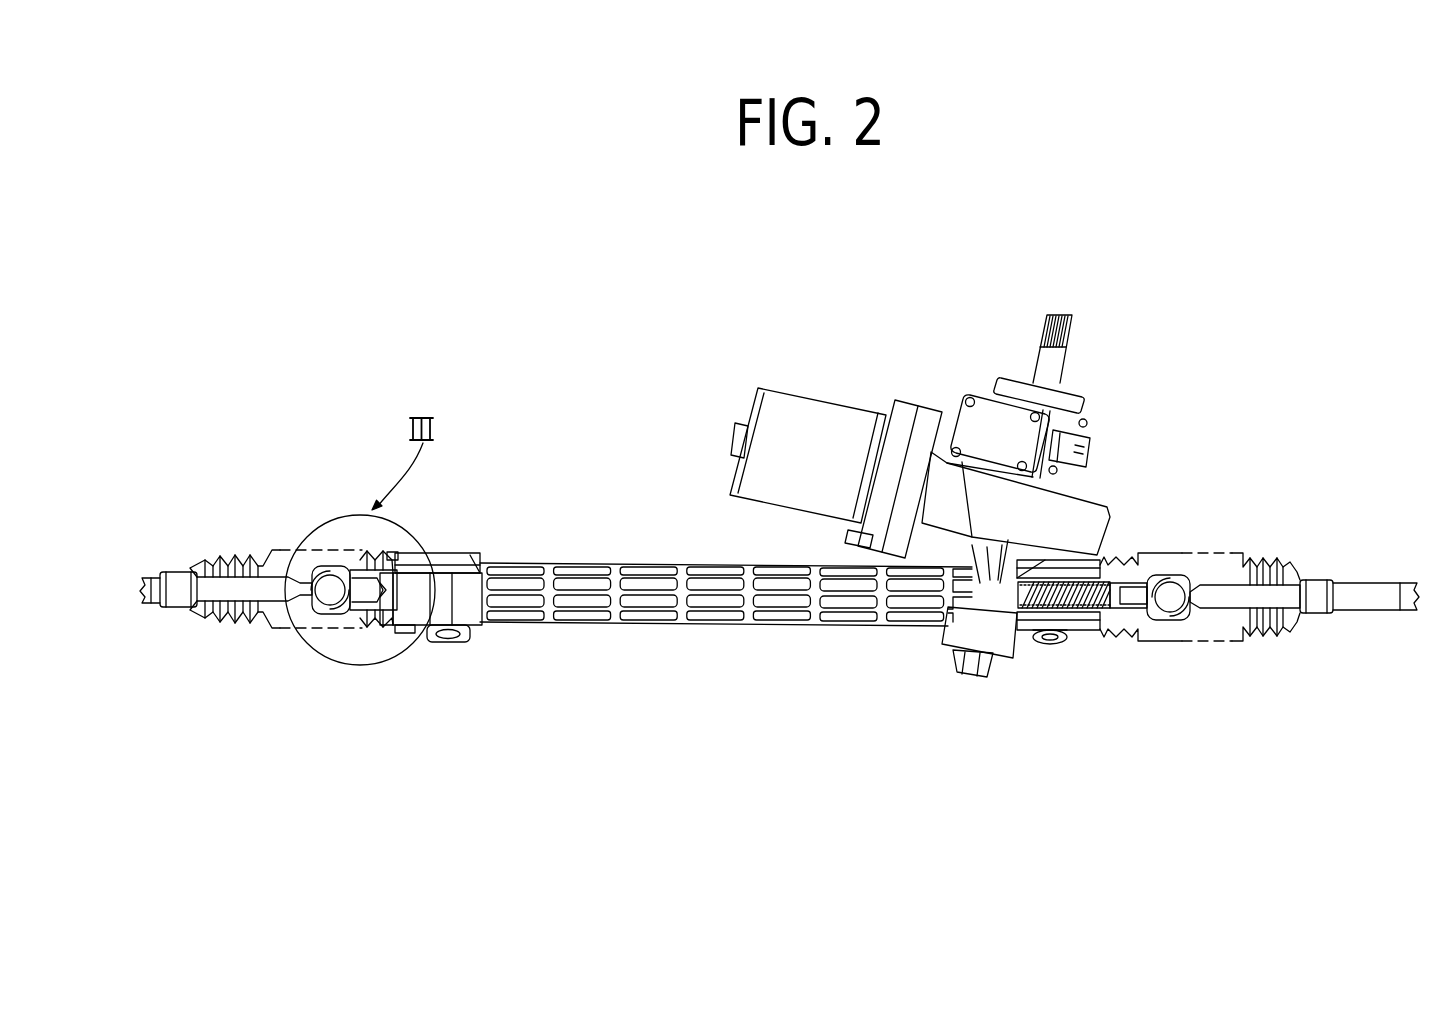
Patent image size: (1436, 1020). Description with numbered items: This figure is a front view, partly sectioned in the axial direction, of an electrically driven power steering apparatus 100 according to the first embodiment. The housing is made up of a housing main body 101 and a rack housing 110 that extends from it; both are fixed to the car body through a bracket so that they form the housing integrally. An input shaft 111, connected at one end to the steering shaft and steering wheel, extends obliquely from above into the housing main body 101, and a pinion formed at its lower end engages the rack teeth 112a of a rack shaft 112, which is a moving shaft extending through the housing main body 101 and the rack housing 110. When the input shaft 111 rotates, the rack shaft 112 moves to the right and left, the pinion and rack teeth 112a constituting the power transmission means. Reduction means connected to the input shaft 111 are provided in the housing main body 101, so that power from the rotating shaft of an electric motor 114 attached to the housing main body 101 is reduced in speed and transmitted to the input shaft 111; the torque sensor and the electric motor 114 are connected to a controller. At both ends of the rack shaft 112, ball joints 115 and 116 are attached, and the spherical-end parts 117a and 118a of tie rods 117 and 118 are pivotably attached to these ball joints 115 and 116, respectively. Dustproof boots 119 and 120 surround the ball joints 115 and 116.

The electrically driven power steering apparatus 100 is at (1187, 343).
The housing main body 101 is at (997, 390).
The rack housing 110 is at (612, 563).
The input shaft 111 is at (1055, 365).
The rack shaft 112 is at (423, 575).
The rack teeth 112a is at (1080, 630).
The electric motor 114 is at (807, 417).
The ball joint 115 is at (355, 572).
The ball joint 116 is at (1172, 600).
The tie rod 117 is at (268, 585).
The spherical-end part 117a is at (330, 597).
The tie rod 118 is at (1220, 590).
The spherical-end part 118a is at (1173, 625).
The dustproof boot 119 is at (263, 568).
The dustproof boot 120 is at (1287, 630).